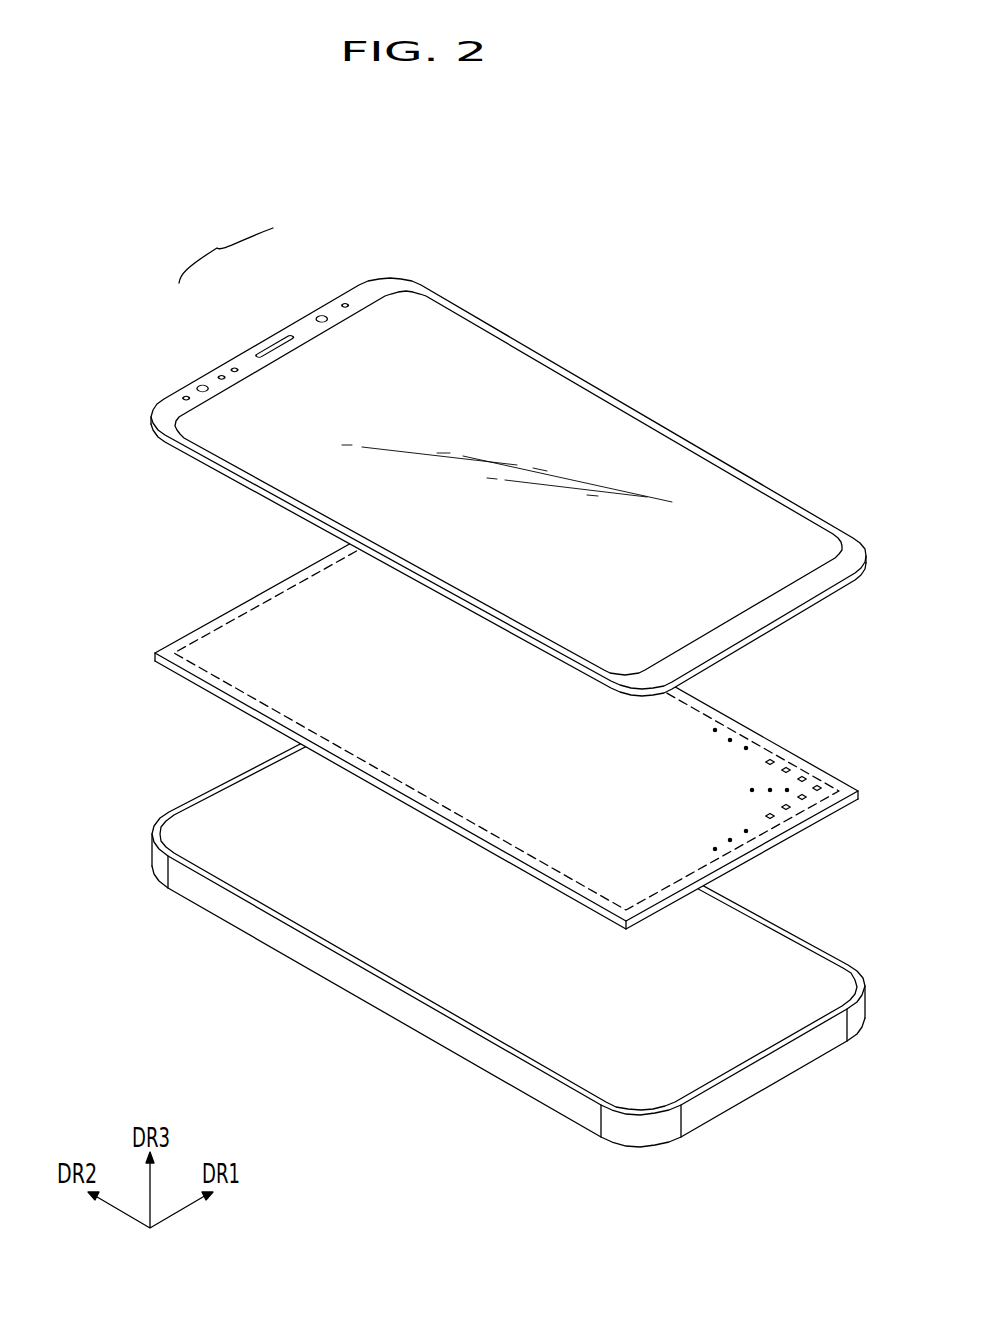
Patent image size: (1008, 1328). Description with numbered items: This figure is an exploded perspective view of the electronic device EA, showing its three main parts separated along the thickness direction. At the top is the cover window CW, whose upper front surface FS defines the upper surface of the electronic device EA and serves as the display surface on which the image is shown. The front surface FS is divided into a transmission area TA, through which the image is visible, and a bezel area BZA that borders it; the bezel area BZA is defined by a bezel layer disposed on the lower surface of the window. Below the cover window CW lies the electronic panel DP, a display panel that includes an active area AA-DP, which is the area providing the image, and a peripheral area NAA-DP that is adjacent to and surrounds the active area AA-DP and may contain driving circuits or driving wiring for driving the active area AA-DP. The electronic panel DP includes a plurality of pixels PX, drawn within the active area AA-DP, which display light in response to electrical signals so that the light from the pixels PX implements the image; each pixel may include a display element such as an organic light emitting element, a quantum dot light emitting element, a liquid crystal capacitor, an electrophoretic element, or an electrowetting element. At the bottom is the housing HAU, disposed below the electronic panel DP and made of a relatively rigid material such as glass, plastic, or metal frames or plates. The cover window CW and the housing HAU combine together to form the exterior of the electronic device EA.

The electronic device EA is at (661, 327).
The cover window CW is at (462, 456).
The front surface FS is at (226, 249).
The bezel area BZA is at (301, 325).
The transmission area TA is at (269, 374).
The electronic panel DP is at (155, 652).
The peripheral area NAA-DP is at (753, 738).
The active area AA-DP is at (795, 788).
The pixels PX is at (774, 818).
The housing HAU is at (152, 858).